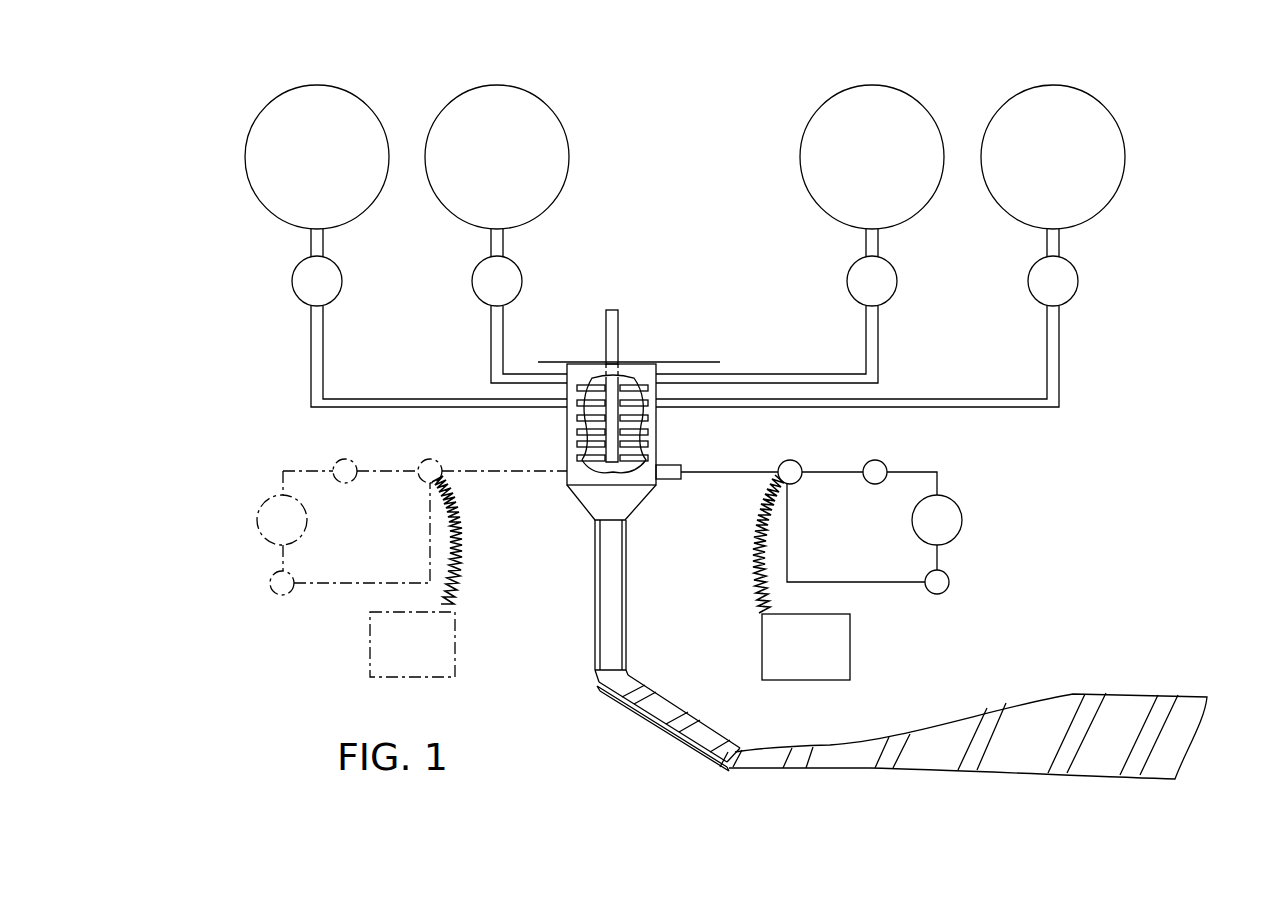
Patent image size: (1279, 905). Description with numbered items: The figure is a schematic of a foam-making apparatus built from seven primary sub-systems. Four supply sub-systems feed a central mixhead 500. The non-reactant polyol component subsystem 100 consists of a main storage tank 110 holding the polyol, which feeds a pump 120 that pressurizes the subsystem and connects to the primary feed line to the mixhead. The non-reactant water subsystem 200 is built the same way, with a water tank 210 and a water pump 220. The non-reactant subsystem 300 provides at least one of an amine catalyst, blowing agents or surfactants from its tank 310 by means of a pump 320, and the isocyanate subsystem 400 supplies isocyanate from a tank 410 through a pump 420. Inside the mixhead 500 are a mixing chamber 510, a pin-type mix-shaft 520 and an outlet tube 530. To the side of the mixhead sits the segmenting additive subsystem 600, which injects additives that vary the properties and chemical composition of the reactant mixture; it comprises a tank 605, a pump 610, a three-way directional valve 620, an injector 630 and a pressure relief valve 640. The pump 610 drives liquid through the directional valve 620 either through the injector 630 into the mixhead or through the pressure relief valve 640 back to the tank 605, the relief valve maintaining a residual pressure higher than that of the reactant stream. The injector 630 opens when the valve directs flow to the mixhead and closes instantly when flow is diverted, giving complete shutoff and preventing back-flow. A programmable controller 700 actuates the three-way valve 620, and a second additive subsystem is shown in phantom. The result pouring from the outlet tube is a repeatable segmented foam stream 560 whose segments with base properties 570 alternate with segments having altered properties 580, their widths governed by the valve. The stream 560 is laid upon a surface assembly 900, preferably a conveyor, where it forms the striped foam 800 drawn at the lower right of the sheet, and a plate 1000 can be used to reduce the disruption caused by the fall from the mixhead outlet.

The non-reactant polyol component subsystem 100 is at (262, 113).
The main storage tank 110 is at (317, 157).
The pump 120 is at (317, 281).
The non-reactant water subsystem 200 is at (442, 113).
The water tank 210 is at (497, 157).
The water pump 220 is at (497, 281).
The non-reactant subsystem 300 is at (817, 113).
The tank 310 is at (872, 157).
The pump 320 is at (872, 281).
The isocyanate subsystem 400 is at (997, 113).
The tank 410 is at (1053, 157).
The pump 420 is at (1053, 281).
The mixhead 500 is at (553, 428).
The mixing chamber 510 is at (638, 370).
The pin-type mix-shaft 520 is at (632, 302).
The outlet tube 530 is at (588, 596).
The segmented foam stream 560 is at (594, 674).
The segments with base properties 570 is at (686, 742).
The segments with altered properties 580 is at (650, 692).
The segmenting additive subsystem 600 is at (970, 484).
The tank 605 is at (937, 520).
The pump 610 is at (950, 580).
The three-way directional valve 620 is at (797, 462).
The injector 630 is at (681, 470).
The pressure relief valve 640 is at (882, 462).
The controller 700 is at (806, 647).
The blade 800 is at (1178, 725).
The surface assembly 900 is at (1078, 792).
The plate 1000 is at (604, 689).